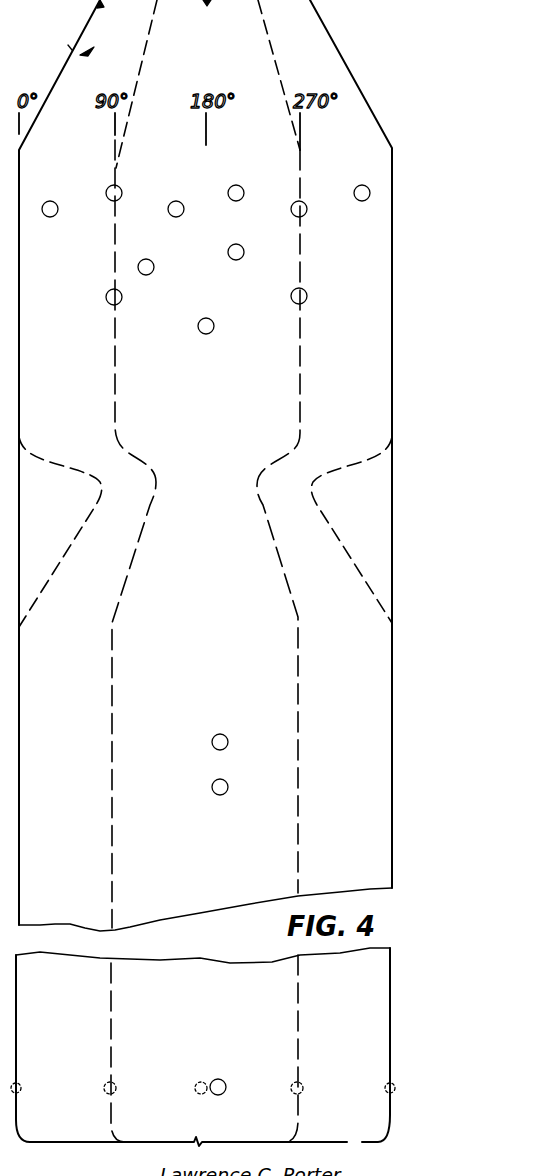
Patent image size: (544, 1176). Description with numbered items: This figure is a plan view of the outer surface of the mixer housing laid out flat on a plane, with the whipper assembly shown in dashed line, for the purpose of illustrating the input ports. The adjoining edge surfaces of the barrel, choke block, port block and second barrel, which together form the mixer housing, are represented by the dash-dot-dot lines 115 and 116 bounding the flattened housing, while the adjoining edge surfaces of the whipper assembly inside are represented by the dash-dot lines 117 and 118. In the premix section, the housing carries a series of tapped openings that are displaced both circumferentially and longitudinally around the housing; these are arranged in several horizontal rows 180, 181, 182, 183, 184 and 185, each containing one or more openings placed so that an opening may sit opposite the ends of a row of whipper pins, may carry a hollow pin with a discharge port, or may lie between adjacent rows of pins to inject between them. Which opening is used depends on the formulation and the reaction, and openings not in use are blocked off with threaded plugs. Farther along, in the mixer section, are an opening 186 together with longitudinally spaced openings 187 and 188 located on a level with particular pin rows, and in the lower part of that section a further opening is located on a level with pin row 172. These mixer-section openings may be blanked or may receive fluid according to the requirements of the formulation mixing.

The dash-dot-dot line 115 is at (83, 31).
The dash-dot-dot line 116 is at (333, 33).
The dash-dot line 117 is at (143, 40).
The dash-dot line 118 is at (272, 45).
The pin row 172 is at (94, 1088).
The horizontal row of openings 180 is at (99, 194).
The horizontal row of openings 181 is at (322, 206).
The horizontal row of openings 182 is at (97, 252).
The horizontal row of openings 183 is at (317, 263).
The horizontal row of openings 184 is at (99, 297).
The horizontal row of openings 185 is at (97, 323).
The aperture 186 is at (226, 736).
The opening 187 is at (226, 781).
The opening 188 is at (224, 1081).